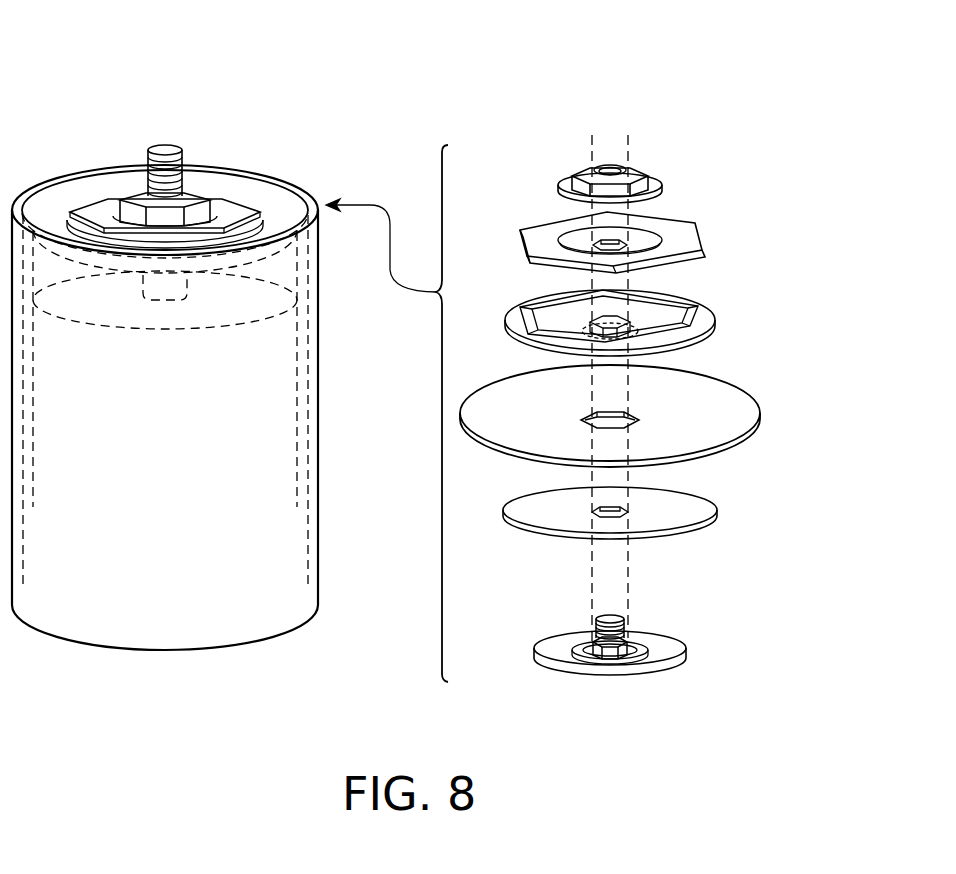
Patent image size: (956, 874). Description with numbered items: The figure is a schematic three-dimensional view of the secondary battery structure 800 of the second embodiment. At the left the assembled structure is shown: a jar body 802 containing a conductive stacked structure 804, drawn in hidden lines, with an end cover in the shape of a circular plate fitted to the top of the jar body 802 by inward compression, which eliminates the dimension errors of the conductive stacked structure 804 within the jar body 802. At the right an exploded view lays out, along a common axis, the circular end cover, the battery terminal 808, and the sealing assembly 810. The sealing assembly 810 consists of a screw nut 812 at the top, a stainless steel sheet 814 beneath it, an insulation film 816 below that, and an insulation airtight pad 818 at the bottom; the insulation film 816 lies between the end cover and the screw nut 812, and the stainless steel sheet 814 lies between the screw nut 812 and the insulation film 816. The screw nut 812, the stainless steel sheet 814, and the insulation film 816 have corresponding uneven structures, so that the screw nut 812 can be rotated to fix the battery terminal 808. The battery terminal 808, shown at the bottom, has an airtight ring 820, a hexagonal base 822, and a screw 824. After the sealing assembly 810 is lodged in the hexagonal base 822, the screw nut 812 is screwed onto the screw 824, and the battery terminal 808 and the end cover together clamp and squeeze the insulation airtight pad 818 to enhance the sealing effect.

The secondary battery structure 800 is at (76, 91).
The jar body 802 is at (318, 440).
The conductive stacked structure 804 is at (296, 335).
The battery terminal 808 is at (767, 580).
The sealing assembly 810 is at (809, 162).
The screw nut 812 is at (648, 177).
The stainless steel sheet 814 is at (690, 236).
The insulation film 816 is at (712, 328).
The insulation airtight pad 818 is at (698, 500).
The airtight ring 820 is at (662, 656).
The hexagonal base 822 is at (642, 646).
The screw 824 is at (622, 622).